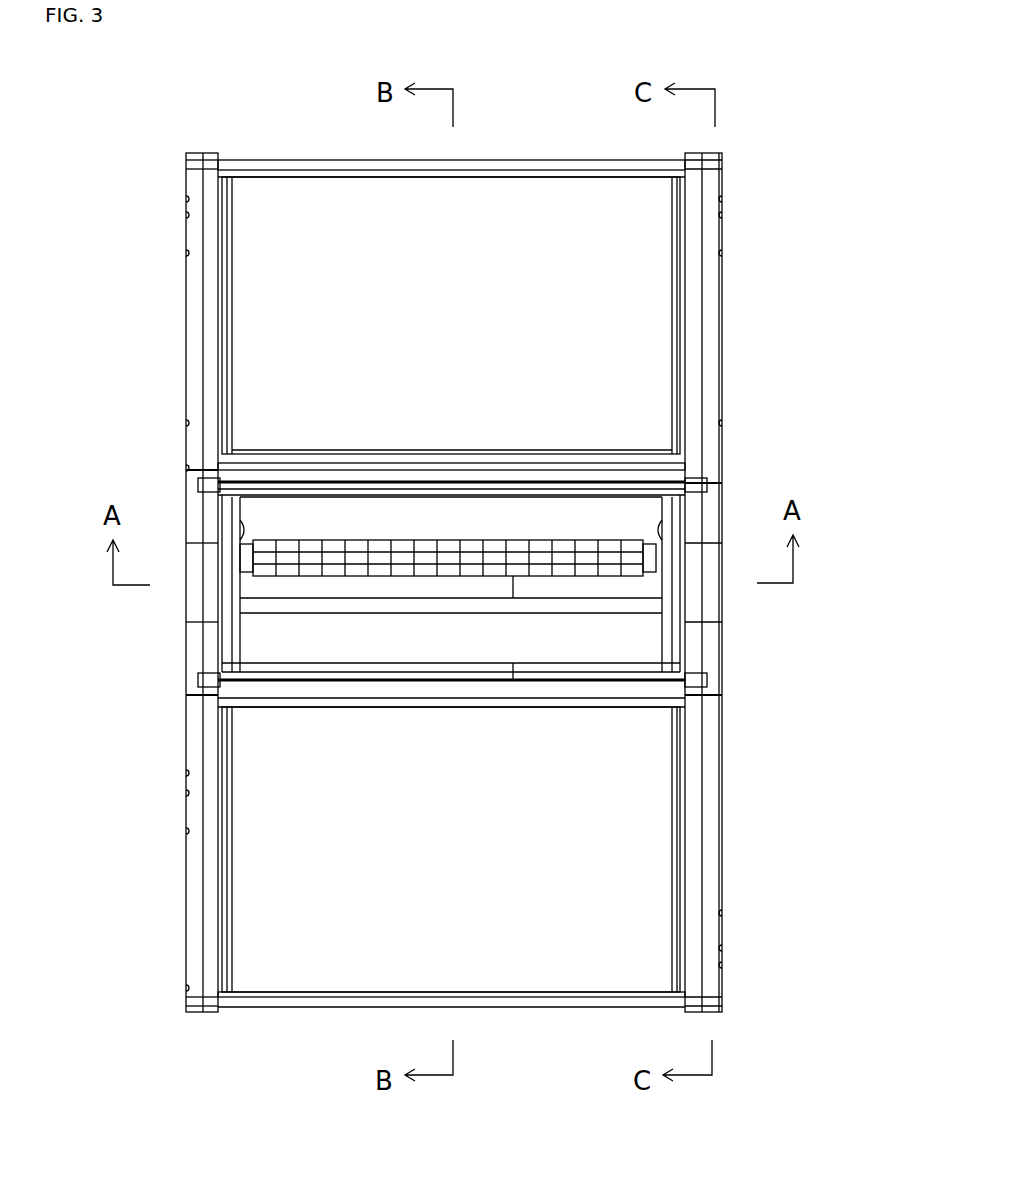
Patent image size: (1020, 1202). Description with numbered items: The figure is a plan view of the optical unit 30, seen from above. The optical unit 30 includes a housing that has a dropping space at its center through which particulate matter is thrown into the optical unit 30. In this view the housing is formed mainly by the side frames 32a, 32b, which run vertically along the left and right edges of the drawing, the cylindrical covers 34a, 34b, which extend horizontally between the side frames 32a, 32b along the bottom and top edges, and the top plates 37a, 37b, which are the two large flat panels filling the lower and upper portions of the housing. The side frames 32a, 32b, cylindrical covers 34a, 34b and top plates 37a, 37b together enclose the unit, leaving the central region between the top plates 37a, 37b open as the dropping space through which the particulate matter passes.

The optical unit 30 is at (165, 126).
The side frame 32a is at (197, 318).
The side frame 32b is at (710, 808).
The cylindrical cover 34a is at (542, 1005).
The cylindrical cover 34b is at (338, 161).
The top plate 37a is at (358, 965).
The top plate 37b is at (475, 200).